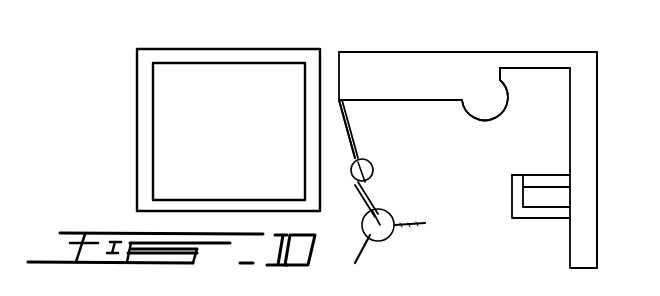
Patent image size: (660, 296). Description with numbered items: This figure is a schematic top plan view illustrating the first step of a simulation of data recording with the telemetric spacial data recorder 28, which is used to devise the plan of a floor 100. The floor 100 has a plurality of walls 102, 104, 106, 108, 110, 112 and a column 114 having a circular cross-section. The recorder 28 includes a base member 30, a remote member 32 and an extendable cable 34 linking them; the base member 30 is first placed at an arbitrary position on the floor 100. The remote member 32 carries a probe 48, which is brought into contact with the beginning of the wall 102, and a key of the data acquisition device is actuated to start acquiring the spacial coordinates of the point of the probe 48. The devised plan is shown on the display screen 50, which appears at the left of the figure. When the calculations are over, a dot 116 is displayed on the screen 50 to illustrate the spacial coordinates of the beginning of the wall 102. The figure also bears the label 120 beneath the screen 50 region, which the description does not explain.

The telemetric spacial data recorder 28 is at (410, 212).
The base member 30 is at (388, 233).
The remote member 32 is at (372, 167).
The extendable cable 34 is at (370, 200).
The probe 48 is at (348, 128).
The display screen 50 is at (277, 77).
The floor 100 is at (510, 146).
The wall 102 is at (425, 103).
The wall 104 is at (510, 73).
The wall 106 is at (542, 73).
The wall 108 is at (570, 118).
The wall 110 is at (548, 206).
The wall 112 is at (527, 186).
The column 114 is at (487, 123).
The dot 116 is at (162, 100).
The display unit 120 is at (205, 288).